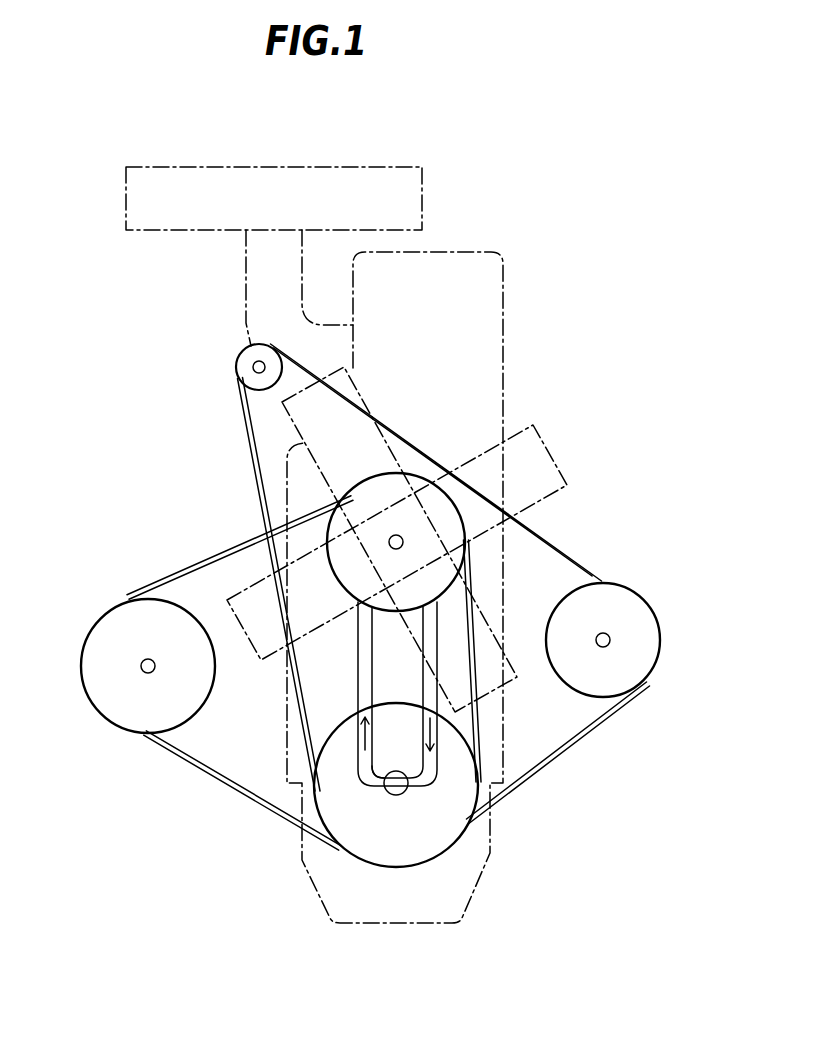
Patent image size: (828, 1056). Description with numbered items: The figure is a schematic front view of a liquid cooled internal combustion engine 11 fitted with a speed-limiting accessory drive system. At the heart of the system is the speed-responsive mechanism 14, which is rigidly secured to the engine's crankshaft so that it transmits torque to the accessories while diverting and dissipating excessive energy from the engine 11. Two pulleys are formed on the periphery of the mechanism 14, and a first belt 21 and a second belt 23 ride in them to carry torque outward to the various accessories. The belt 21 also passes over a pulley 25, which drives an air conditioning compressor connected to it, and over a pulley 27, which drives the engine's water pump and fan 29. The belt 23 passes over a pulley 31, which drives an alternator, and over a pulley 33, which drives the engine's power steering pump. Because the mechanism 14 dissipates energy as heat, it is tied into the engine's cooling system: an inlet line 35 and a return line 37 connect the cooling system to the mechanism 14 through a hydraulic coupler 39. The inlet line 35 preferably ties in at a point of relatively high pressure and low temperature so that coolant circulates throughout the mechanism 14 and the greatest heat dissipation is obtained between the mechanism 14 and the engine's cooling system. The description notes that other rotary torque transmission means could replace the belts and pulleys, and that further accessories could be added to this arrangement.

The internal combustion engine 11 is at (493, 332).
The speed-responsive mechanism 14 is at (435, 835).
The belt 21 is at (213, 555).
The belt 23 is at (580, 552).
The pulley 25 is at (123, 703).
The pulley 27 is at (452, 556).
The water pump and fan 29 is at (568, 477).
The pulley 31 is at (237, 362).
The pulley 33 is at (640, 661).
The inlet line 35 is at (422, 778).
The return line 37 is at (367, 777).
The hydraulic coupler 39 is at (396, 793).